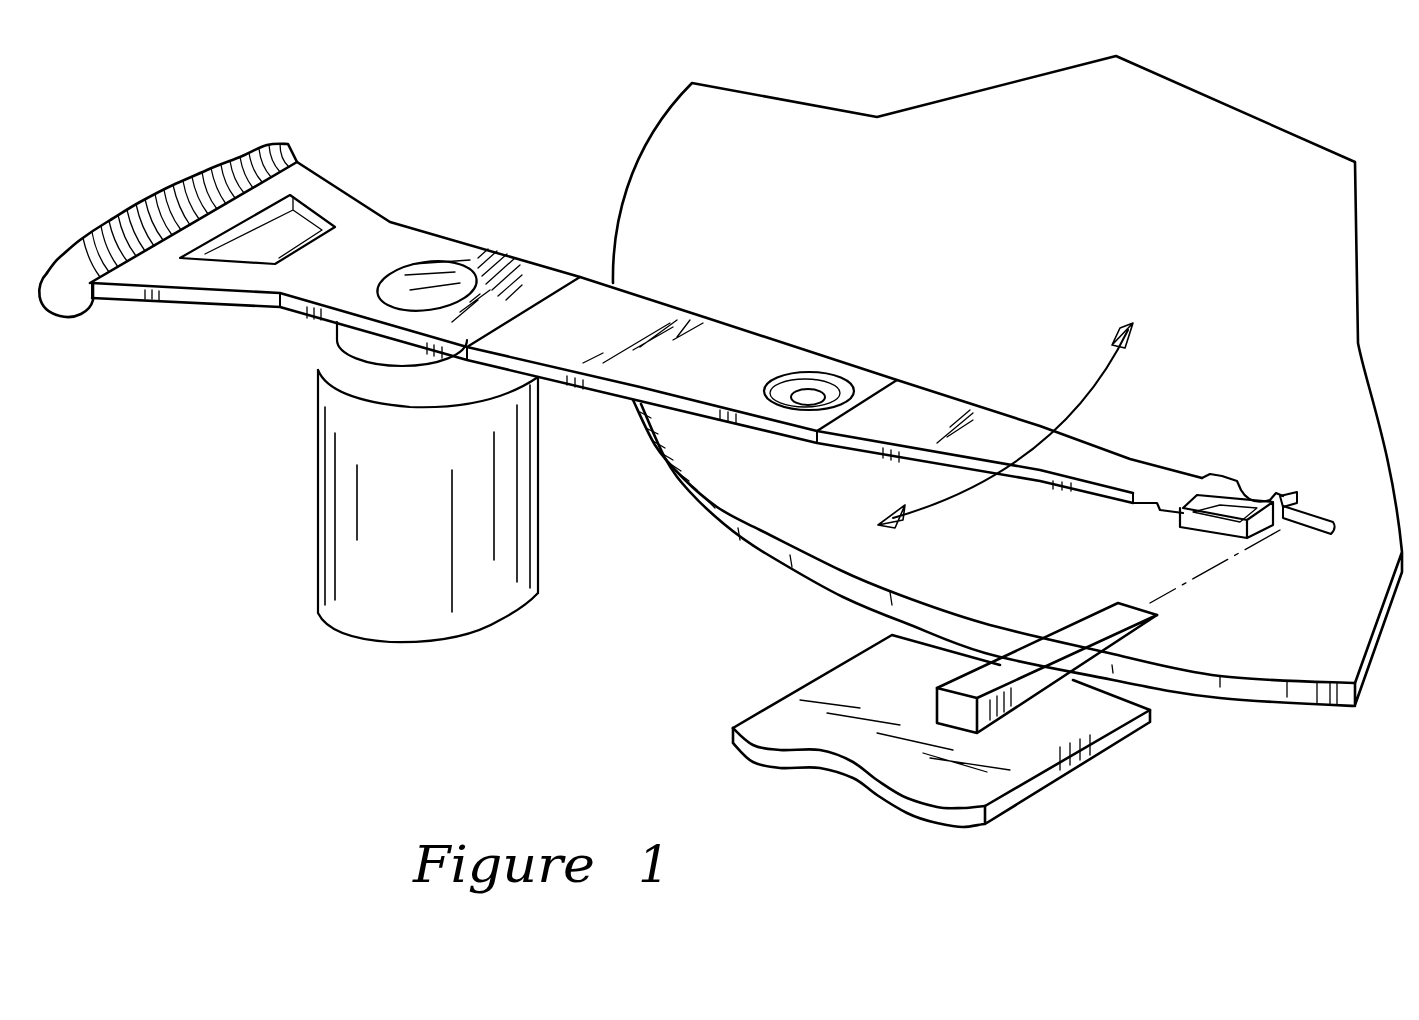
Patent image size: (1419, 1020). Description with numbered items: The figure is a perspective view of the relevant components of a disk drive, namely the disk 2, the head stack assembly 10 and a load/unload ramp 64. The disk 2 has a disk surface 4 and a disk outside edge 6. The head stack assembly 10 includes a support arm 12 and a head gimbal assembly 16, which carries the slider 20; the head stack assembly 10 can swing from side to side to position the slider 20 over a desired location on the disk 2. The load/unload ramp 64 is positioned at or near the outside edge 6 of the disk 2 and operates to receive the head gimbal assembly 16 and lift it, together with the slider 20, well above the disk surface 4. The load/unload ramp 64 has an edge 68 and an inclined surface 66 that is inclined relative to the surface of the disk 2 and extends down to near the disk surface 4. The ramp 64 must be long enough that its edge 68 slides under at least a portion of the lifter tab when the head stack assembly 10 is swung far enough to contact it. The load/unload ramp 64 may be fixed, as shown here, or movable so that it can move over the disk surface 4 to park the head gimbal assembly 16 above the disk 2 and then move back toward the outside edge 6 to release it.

The disk 2 is at (1308, 727).
The disk surface 4 is at (1273, 663).
The disk outside edge 6 is at (710, 512).
The head stack assembly 10 is at (567, 223).
The support arm 12 is at (732, 352).
The head gimbal assembly 16 is at (1280, 482).
The slider 20 is at (1270, 493).
The load/unload ramp 64 is at (925, 682).
The inclined surface 66 is at (1070, 638).
The edge 68 is at (1148, 603).